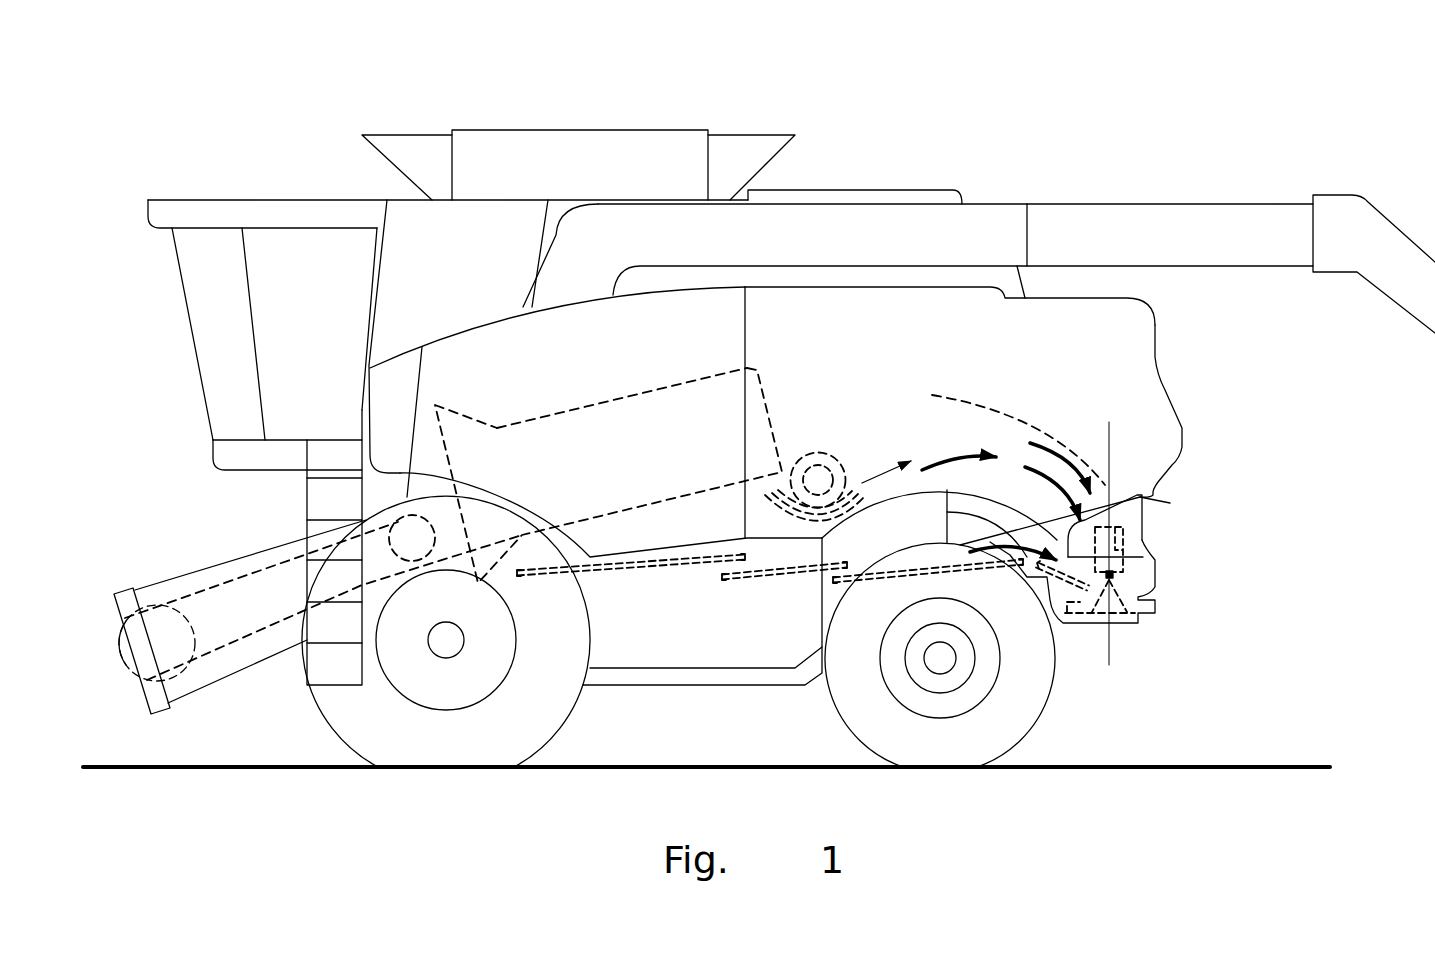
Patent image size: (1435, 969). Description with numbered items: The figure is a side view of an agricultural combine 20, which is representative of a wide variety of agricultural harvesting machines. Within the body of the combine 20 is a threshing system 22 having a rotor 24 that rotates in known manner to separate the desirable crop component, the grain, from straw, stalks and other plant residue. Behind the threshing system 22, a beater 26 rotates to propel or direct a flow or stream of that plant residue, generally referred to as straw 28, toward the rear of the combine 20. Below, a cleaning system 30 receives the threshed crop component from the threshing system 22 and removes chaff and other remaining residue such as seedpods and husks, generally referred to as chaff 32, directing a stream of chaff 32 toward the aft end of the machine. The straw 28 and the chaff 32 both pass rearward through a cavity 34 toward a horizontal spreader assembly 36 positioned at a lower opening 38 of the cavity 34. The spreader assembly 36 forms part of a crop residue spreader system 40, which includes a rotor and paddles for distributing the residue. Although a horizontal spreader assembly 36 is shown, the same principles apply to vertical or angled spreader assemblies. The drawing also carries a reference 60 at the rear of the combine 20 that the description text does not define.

The agricultural combine 20 is at (1122, 153).
The threshing system 22 is at (540, 404).
The rotor 24 is at (593, 413).
The beater 26 is at (807, 455).
The straw 28 is at (877, 473).
The cleaning system 30 is at (803, 591).
The chaff 32 is at (947, 512).
The cavity 34 is at (998, 443).
The horizontal spreader assembly 36 is at (1177, 604).
The lower opening 38 is at (1081, 543).
The crop residue spreader system 40 is at (1190, 543).
The rear hood 60 is at (1199, 426).